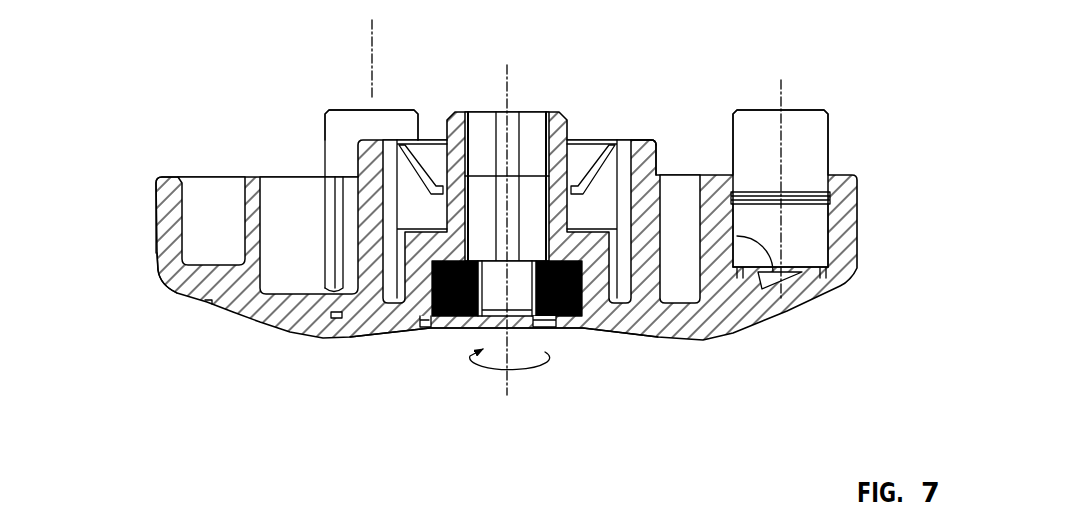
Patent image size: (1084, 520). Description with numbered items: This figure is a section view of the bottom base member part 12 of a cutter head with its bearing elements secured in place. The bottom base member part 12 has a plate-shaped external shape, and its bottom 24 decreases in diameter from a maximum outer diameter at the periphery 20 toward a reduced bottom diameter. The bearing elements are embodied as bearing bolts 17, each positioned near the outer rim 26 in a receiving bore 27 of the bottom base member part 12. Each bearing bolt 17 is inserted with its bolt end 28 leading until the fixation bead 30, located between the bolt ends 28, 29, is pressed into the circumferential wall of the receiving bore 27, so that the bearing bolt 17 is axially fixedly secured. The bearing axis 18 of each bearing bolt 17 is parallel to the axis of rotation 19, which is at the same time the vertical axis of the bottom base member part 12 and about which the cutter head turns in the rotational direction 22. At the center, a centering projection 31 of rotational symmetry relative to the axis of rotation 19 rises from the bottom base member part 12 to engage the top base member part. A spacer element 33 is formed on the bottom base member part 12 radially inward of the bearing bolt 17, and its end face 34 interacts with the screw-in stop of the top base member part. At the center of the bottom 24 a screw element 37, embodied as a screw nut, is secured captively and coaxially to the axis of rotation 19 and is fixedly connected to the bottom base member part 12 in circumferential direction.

The bottom base member part 12 is at (235, 299).
The bearing bolt 17 is at (346, 208).
The bearing axis 18 is at (370, 58).
The axis of rotation 19 is at (507, 65).
The periphery 20 is at (150, 235).
The rotational direction 22 is at (523, 367).
The bottom 24 is at (422, 343).
The outer rim 26 is at (165, 183).
The receiving bore 27 is at (770, 292).
The bolt end 28 is at (830, 268).
The bolt end 29 is at (340, 108).
The fixation bead 30 is at (813, 197).
The centering projection 31 is at (556, 145).
The spacer element 33 is at (643, 163).
The end face 34 is at (650, 140).
The screw element 37 is at (557, 316).